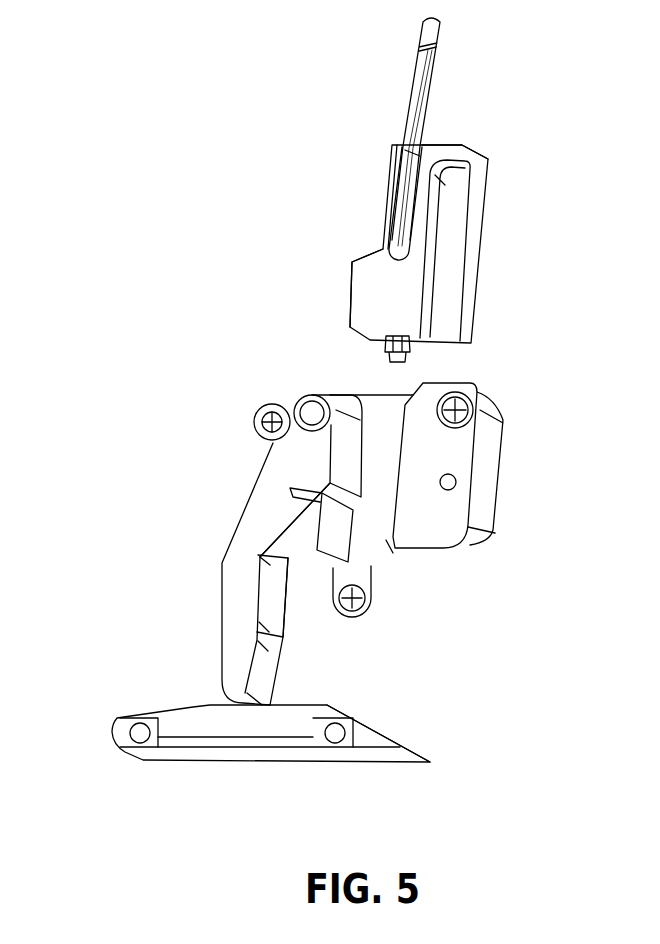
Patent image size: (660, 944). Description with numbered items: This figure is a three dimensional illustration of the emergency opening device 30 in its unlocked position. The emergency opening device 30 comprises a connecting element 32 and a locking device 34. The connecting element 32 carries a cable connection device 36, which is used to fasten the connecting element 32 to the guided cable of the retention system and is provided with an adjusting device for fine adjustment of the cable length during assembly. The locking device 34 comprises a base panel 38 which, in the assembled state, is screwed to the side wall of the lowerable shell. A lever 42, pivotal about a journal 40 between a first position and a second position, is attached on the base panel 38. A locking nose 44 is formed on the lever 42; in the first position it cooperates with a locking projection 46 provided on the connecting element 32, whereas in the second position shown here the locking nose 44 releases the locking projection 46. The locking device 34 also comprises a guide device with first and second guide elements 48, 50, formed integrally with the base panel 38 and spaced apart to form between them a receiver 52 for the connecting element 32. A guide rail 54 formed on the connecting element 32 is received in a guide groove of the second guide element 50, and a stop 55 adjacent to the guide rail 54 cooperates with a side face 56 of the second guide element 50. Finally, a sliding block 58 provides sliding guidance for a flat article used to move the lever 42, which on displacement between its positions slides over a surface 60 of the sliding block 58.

The emergency opening device 30 is at (344, 427).
The connecting element 32 is at (448, 190).
The locking device 34 is at (347, 577).
The cable connection device 36 is at (427, 88).
The base panel 38 is at (283, 402).
The journal 40 is at (311, 410).
The lever 42 is at (262, 511).
The locking nose 44 is at (312, 477).
The locking projection 46 is at (373, 258).
The first guide element 48 is at (338, 540).
The second guide element 50 is at (514, 460).
The receiver 52 is at (382, 425).
The guide rail 54 is at (450, 252).
The stop 55 is at (452, 145).
The side face 56 is at (472, 385).
The sliding block 58 is at (299, 770).
The surface 60 is at (400, 740).